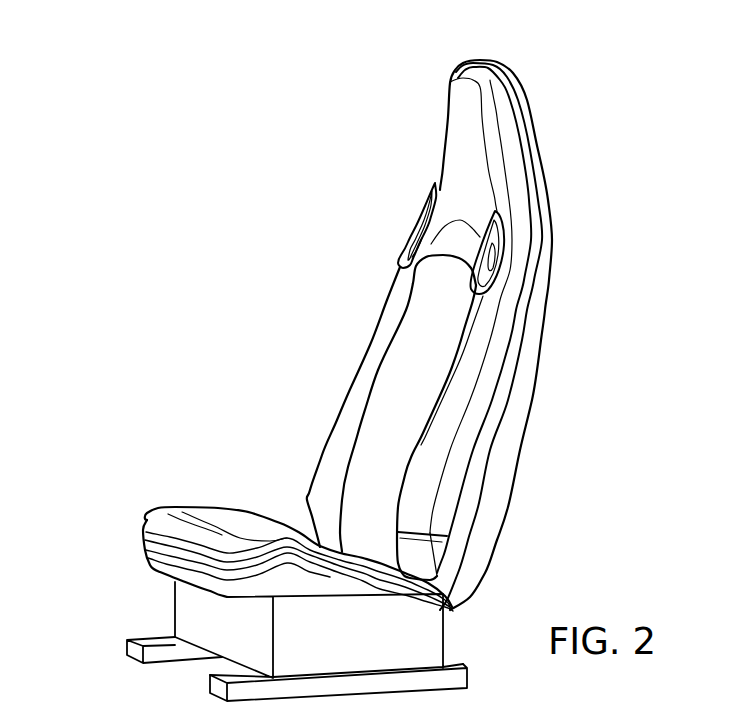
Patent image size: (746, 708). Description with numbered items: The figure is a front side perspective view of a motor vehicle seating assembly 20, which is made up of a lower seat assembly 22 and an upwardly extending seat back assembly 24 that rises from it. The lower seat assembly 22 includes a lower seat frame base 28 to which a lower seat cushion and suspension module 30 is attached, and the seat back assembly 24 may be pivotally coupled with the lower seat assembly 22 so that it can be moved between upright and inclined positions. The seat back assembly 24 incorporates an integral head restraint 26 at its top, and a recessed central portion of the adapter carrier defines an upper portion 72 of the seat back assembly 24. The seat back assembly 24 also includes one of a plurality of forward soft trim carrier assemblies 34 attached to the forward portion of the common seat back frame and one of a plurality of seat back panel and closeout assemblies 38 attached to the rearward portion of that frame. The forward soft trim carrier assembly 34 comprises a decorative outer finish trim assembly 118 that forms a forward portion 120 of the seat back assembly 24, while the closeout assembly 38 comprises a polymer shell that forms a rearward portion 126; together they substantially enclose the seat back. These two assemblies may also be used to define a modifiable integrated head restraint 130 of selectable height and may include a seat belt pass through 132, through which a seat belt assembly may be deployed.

The motor vehicle seating assembly 20 is at (615, 71).
The lower seat assembly 22 is at (196, 518).
The upwardly extending seat back assembly 24 is at (520, 360).
The integral head restraint 26 is at (507, 134).
The lower seat frame base 28 is at (423, 640).
The lower seat cushion and suspension module 30 is at (162, 542).
The forward soft trim carrier assembly 34 is at (452, 462).
The seat back panel and closeout assembly 38 is at (540, 280).
The upper portion 72 is at (465, 78).
The decorative outer finish trim assembly 118 is at (408, 311).
The forward portion 120 is at (370, 362).
The rearward portion 126 is at (487, 524).
The modifiable integrated head restraint 130 is at (457, 137).
The seat belt pass through 132 is at (427, 226).